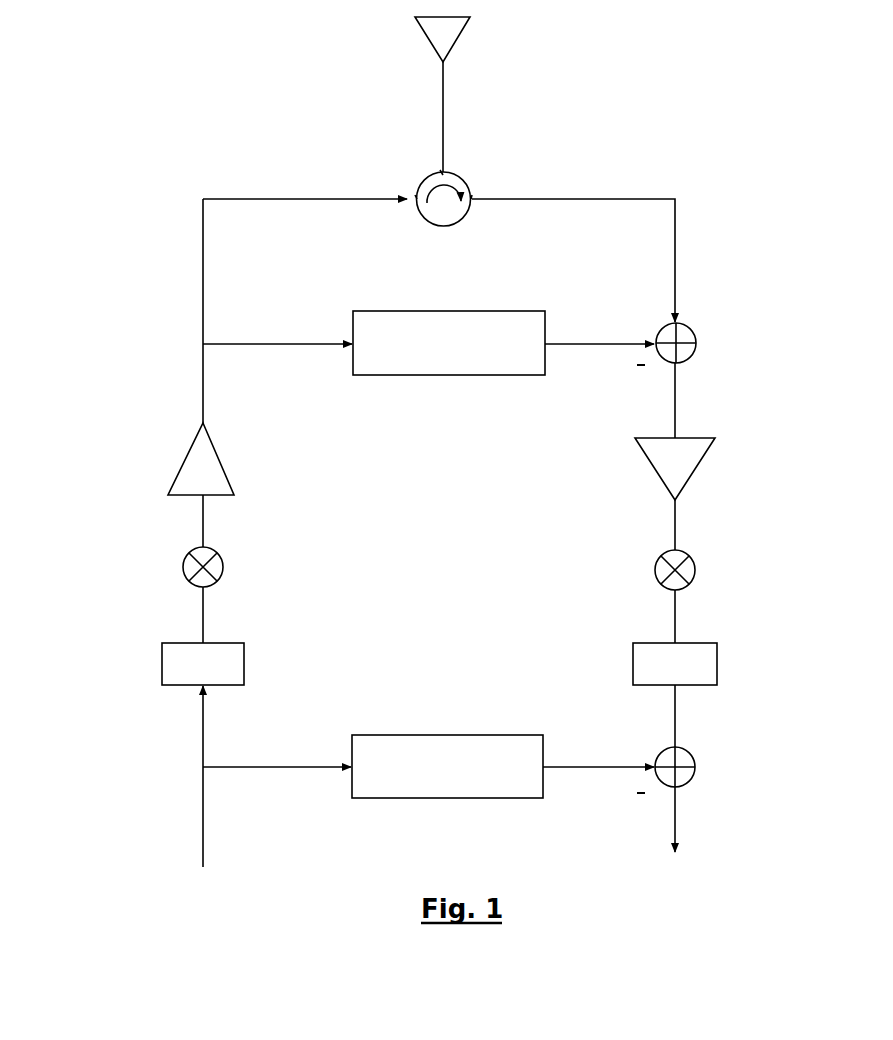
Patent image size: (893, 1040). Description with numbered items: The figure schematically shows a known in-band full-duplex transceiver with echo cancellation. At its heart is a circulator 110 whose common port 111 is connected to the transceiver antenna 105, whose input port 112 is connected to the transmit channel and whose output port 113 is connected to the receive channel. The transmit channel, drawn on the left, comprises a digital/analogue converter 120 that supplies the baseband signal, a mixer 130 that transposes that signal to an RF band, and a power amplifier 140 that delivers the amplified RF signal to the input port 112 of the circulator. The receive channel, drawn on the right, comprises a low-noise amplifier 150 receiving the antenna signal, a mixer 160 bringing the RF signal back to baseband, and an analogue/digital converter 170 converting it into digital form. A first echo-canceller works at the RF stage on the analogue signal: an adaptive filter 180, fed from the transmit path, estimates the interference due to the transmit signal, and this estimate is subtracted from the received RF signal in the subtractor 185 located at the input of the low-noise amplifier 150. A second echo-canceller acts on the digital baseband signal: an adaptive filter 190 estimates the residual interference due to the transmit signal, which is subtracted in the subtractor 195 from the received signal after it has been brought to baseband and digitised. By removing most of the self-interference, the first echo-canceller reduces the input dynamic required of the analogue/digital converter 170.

The transceiver antenna 105 is at (458, 38).
The circulator 110 is at (470, 180).
The common port 111 is at (440, 173).
The input port 112 is at (415, 197).
The output port 113 is at (473, 195).
The digital/analogue converter 120 is at (170, 643).
The mixer 130 is at (187, 553).
The power amplifier 140 is at (193, 438).
The low-noise amplifier 150 is at (715, 438).
The mixer 160 is at (690, 552).
The analogue/digital converter 170 is at (700, 643).
The adaptive filter 180 is at (415, 311).
The subtractor 185 is at (693, 330).
The adaptive filter 190 is at (415, 735).
The subtractor 195 is at (693, 750).